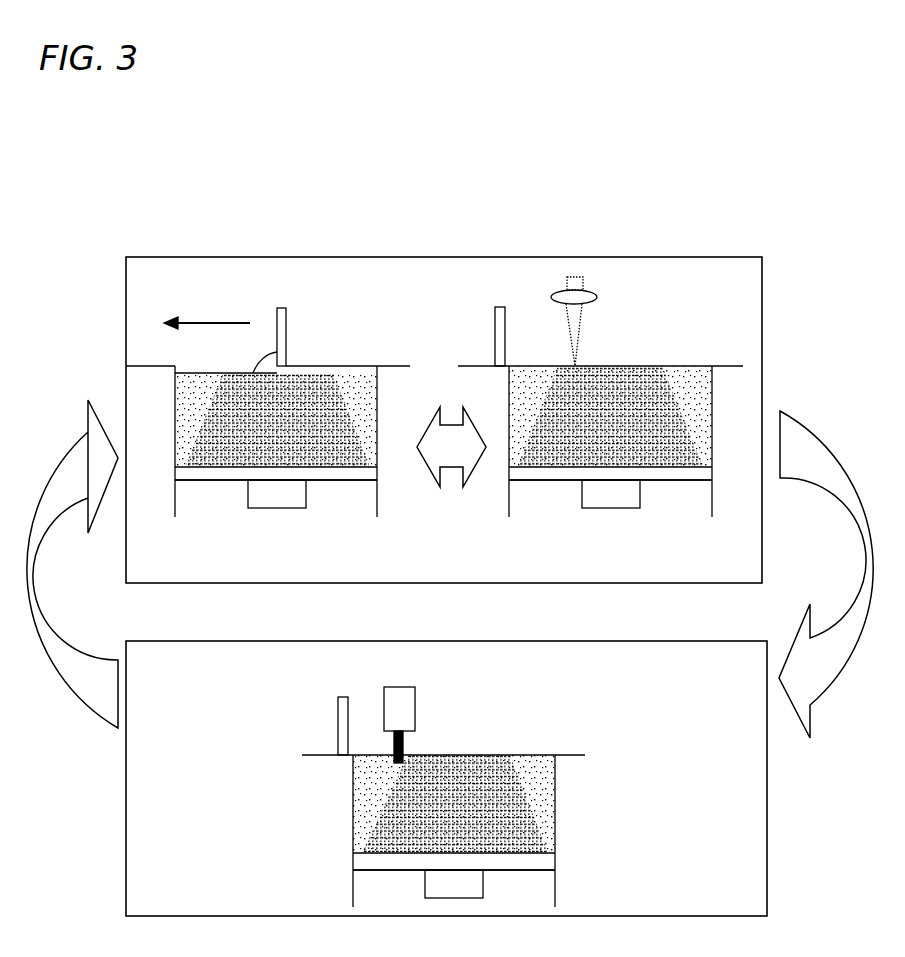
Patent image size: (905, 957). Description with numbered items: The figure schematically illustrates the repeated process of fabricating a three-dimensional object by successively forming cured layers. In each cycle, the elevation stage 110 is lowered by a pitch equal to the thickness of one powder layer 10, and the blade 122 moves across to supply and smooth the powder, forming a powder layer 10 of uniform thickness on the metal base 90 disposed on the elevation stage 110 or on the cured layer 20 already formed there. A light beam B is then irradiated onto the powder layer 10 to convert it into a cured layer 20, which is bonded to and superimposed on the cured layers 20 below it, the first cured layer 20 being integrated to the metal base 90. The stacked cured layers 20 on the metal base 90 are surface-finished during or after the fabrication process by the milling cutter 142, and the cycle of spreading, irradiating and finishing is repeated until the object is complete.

The powder layer 10 is at (313, 368).
The cured layer 20 is at (195, 437).
The metal base 90 is at (337, 462).
The elevation stage 110 is at (223, 474).
The blade 122 is at (283, 330).
The milling cutter 142 is at (417, 707).
The energy beam B is at (582, 323).